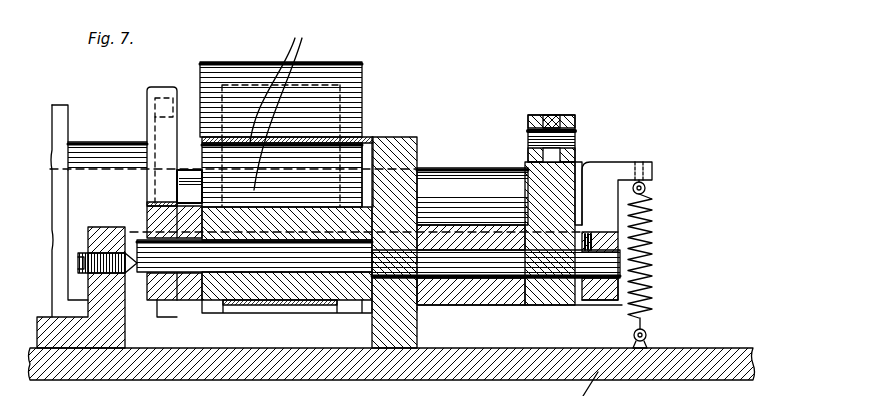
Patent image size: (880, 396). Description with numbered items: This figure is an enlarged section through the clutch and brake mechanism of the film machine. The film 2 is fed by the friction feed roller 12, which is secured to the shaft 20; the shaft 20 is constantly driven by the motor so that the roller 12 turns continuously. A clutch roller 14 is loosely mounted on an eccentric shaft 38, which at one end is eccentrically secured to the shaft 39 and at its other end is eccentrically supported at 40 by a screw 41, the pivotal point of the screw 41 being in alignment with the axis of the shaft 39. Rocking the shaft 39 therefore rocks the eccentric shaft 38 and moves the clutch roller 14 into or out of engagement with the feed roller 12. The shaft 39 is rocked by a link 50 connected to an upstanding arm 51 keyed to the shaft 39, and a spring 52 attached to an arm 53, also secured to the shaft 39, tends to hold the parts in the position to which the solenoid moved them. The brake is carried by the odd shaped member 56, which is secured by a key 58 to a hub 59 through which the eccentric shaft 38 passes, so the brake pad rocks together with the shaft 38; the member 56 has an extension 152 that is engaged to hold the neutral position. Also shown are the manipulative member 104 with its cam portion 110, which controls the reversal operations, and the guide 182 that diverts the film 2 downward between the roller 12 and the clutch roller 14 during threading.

The manipulative member 104 is at (48, 103).
The cam portion 110 is at (63, 110).
The extension 152 is at (160, 88).
The guide 182 is at (279, 105).
The film 2 is at (333, 80).
The friction feed roller 12 is at (362, 86).
The odd shaped member 56 is at (147, 105).
The key 58 is at (147, 233).
The screw 41 is at (78, 268).
The eccentric support 40 is at (142, 275).
The hub 59 is at (177, 305).
The eccentric shaft 38 is at (223, 305).
The clutch roller 14 is at (318, 300).
The shaft 39 is at (462, 263).
The shaft 20 is at (482, 172).
The link 50 is at (553, 115).
The upstanding arm 51 is at (576, 165).
The arm 53 is at (612, 162).
The spring 52 is at (648, 238).